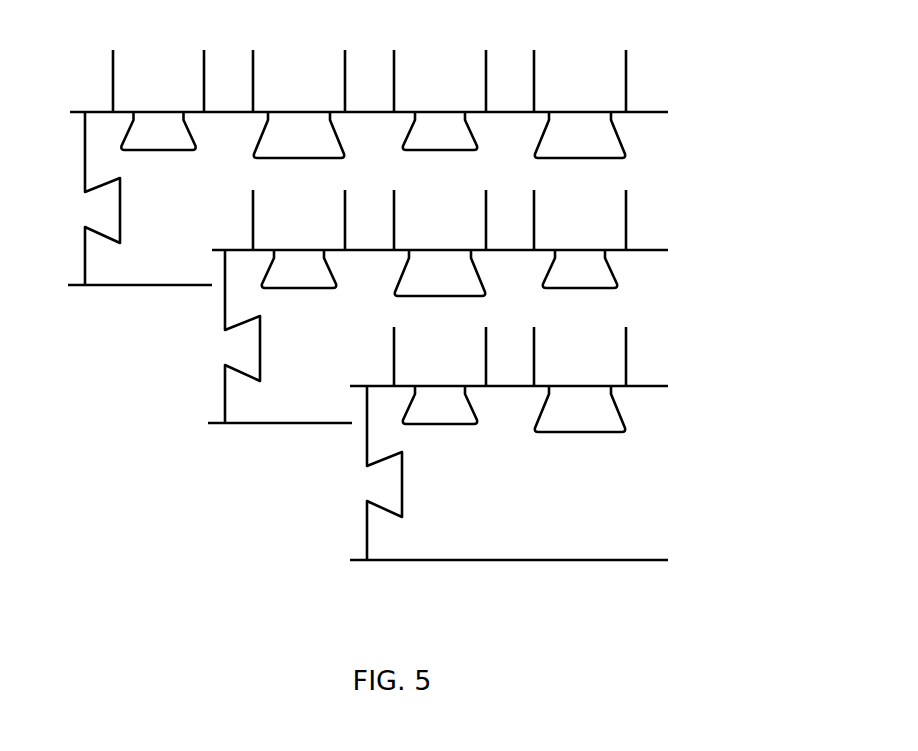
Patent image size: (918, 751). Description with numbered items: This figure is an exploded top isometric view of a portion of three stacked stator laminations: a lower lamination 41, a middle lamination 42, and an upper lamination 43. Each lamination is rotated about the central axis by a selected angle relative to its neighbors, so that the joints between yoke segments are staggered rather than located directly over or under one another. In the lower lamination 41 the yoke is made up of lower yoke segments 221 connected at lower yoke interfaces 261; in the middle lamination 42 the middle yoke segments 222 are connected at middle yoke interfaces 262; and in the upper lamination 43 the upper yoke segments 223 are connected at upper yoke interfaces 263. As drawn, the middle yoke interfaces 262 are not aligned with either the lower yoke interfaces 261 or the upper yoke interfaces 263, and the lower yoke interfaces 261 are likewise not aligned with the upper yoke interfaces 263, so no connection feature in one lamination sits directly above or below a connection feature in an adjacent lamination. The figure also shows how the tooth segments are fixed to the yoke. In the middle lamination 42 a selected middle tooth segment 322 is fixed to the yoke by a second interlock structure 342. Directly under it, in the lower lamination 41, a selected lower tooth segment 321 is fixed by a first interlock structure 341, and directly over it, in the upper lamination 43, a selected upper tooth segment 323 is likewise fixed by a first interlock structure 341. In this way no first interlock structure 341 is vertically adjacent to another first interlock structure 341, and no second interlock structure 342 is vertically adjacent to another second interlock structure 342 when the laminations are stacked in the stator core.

The lower lamination 41 is at (678, 148).
The middle lamination 42 is at (678, 287).
The upper lamination 43 is at (678, 428).
The lower tooth segment 321 is at (420, 92).
The middle tooth segment 322 is at (420, 226).
The upper tooth segment 323 is at (422, 362).
The first interlock structure 341 is at (458, 422).
The second interlock structure 342 is at (420, 294).
The lower yoke segment 221 is at (139, 222).
The middle yoke segment 222 is at (286, 359).
The upper yoke segment 223 is at (422, 495).
The lower yoke interface 261 is at (85, 300).
The middle yoke interface 262 is at (225, 438).
The upper yoke interface 263 is at (366, 576).